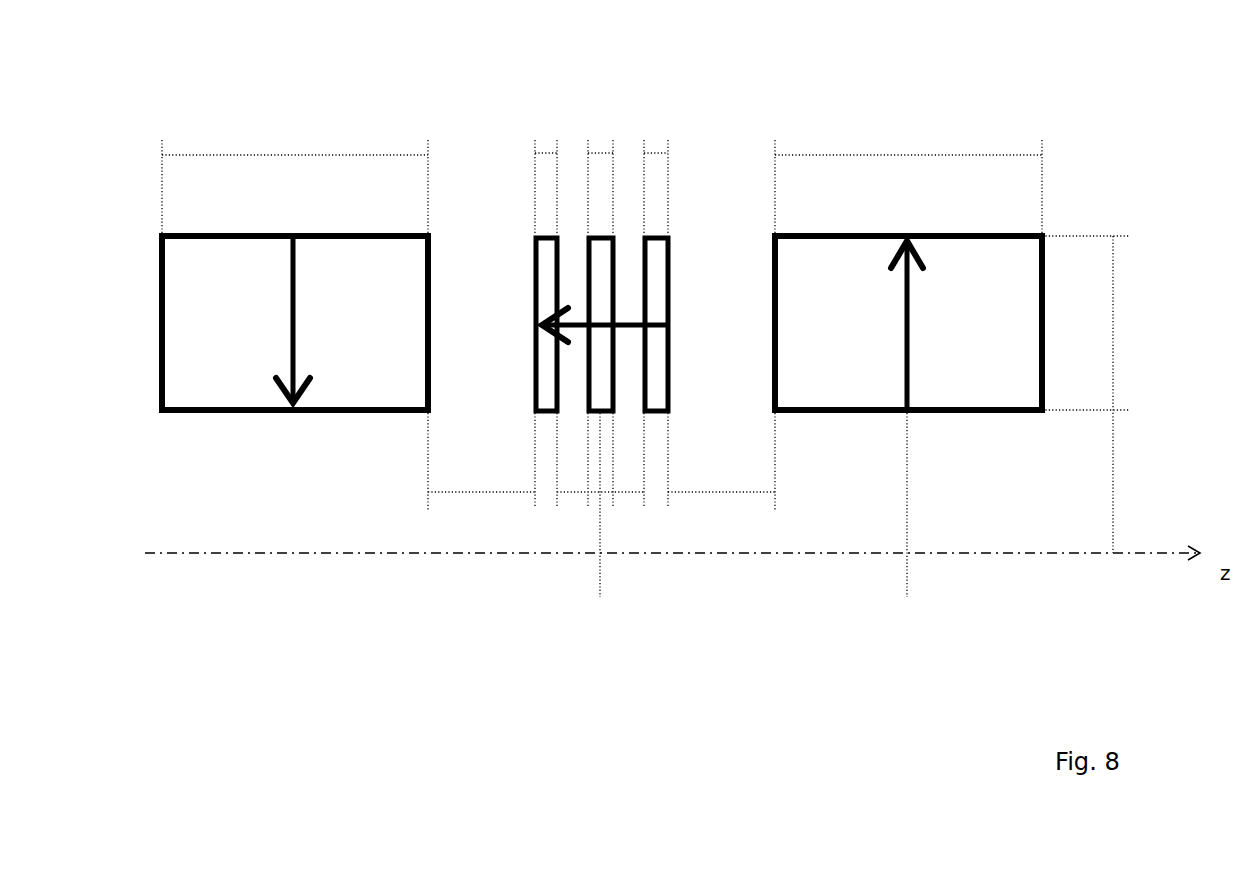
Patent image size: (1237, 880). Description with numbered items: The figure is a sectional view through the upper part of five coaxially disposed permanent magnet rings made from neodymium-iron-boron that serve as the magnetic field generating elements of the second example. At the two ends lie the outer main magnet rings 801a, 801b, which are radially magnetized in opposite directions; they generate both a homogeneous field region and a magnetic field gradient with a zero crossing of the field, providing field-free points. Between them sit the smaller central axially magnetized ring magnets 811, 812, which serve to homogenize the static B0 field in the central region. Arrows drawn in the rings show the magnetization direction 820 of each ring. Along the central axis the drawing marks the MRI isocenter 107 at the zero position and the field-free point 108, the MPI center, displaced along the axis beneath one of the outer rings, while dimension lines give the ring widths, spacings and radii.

The radially magnetized main magnet ring 801a is at (227, 232).
The main magnet ring magnetized radially in opposite direction 801b is at (1018, 232).
The axially magnetized ring magnets 811 is at (535, 235).
The axially magnetized ring magnet 812 is at (660, 233).
The magnetization direction 820 is at (288, 348).
The MRI isocenter 107 is at (597, 557).
The field-free point 108 is at (913, 558).